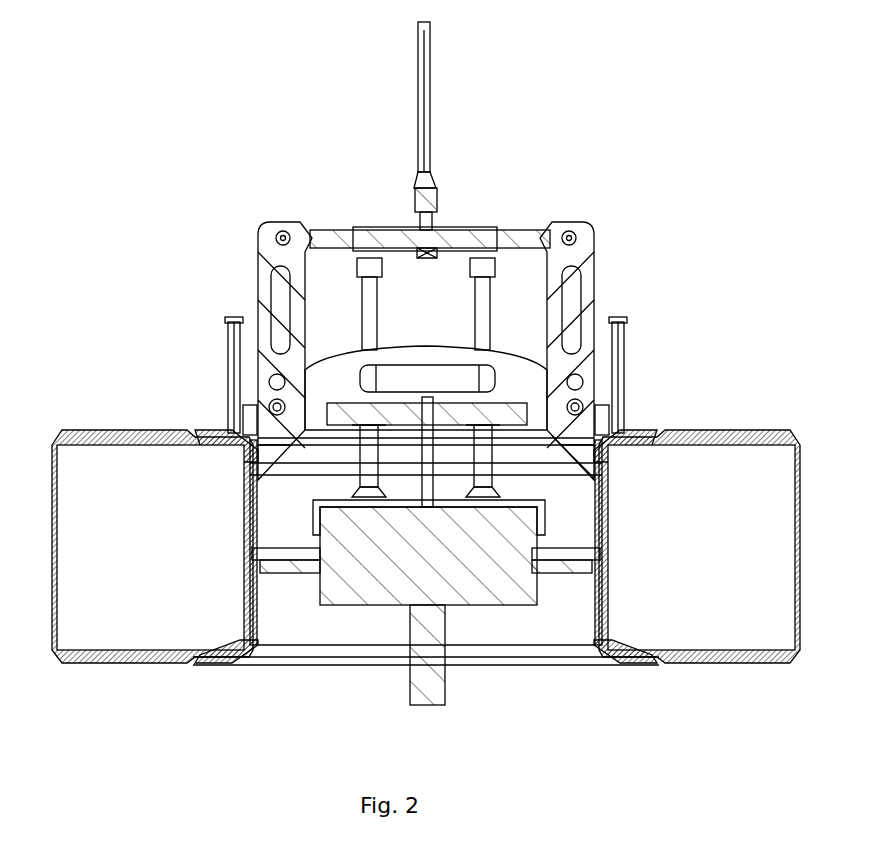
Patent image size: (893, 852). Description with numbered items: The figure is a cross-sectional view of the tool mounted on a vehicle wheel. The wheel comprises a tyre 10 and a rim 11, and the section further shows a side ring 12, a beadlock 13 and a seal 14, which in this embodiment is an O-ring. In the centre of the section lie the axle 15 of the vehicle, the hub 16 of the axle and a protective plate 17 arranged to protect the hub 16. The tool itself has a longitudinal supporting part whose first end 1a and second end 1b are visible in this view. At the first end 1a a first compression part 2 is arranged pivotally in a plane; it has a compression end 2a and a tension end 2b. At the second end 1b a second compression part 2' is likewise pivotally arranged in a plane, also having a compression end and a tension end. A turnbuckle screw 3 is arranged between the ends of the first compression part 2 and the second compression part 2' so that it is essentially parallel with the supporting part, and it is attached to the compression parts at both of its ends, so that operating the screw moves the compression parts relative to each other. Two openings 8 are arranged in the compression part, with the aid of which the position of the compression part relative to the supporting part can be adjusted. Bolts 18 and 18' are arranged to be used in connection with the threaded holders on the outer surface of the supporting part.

The first end of the supporting part 1a is at (226, 414).
The second end of the supporting part 1b is at (630, 413).
The first compression part 2 is at (605, 339).
The second compression part 2' is at (233, 351).
The compression end 2a is at (590, 476).
The tension end 2b is at (579, 229).
The turnbuckle screw 3 is at (472, 240).
The openings 8 is at (578, 380).
The tyre 10 is at (745, 625).
The rim 11 is at (643, 657).
The side ring 12 is at (652, 433).
The beadlock 13 is at (222, 437).
The seal 14 is at (598, 447).
The axle 15 is at (422, 660).
The hub 16 is at (365, 562).
The protective plate 17 is at (325, 507).
The bolt 18 is at (661, 373).
The bolt 18' is at (180, 349).